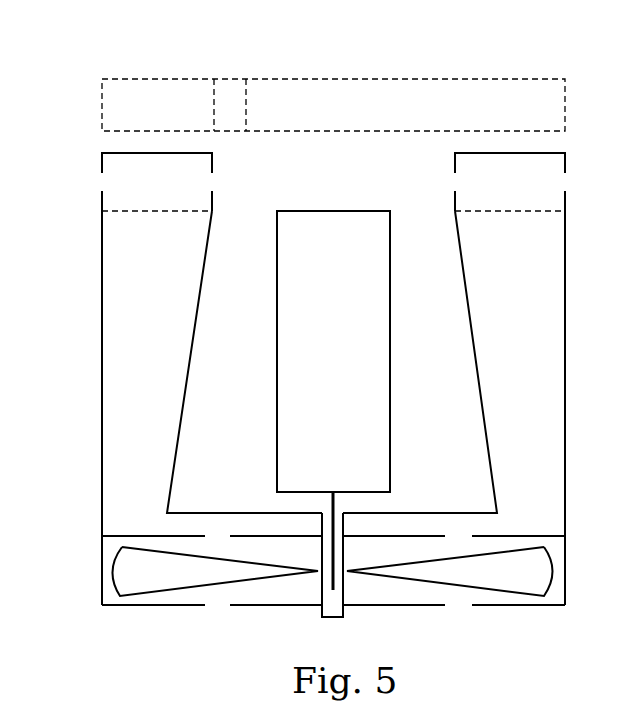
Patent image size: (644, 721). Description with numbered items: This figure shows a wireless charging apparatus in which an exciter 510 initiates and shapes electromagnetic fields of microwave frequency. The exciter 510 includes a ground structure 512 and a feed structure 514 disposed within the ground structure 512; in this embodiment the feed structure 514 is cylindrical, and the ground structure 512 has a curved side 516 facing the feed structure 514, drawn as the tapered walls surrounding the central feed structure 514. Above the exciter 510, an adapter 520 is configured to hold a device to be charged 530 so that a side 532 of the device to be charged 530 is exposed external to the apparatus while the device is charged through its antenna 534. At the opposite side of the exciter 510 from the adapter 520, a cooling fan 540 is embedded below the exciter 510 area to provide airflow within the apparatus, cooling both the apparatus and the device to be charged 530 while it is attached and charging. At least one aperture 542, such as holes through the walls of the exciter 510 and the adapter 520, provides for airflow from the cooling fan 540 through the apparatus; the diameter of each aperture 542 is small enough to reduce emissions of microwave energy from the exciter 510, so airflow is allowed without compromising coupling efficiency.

The exciter 510 is at (88, 211).
The ground structure 512 is at (275, 537).
The feed structure 514 is at (352, 364).
The curved side 516 is at (193, 364).
The adapter 520 is at (102, 158).
The device to be charged 530 is at (102, 105).
The side of the device to be charged 532 is at (413, 67).
The antenna 534 is at (229, 85).
The cooling fan 540 is at (176, 583).
The aperture 542 is at (455, 181).